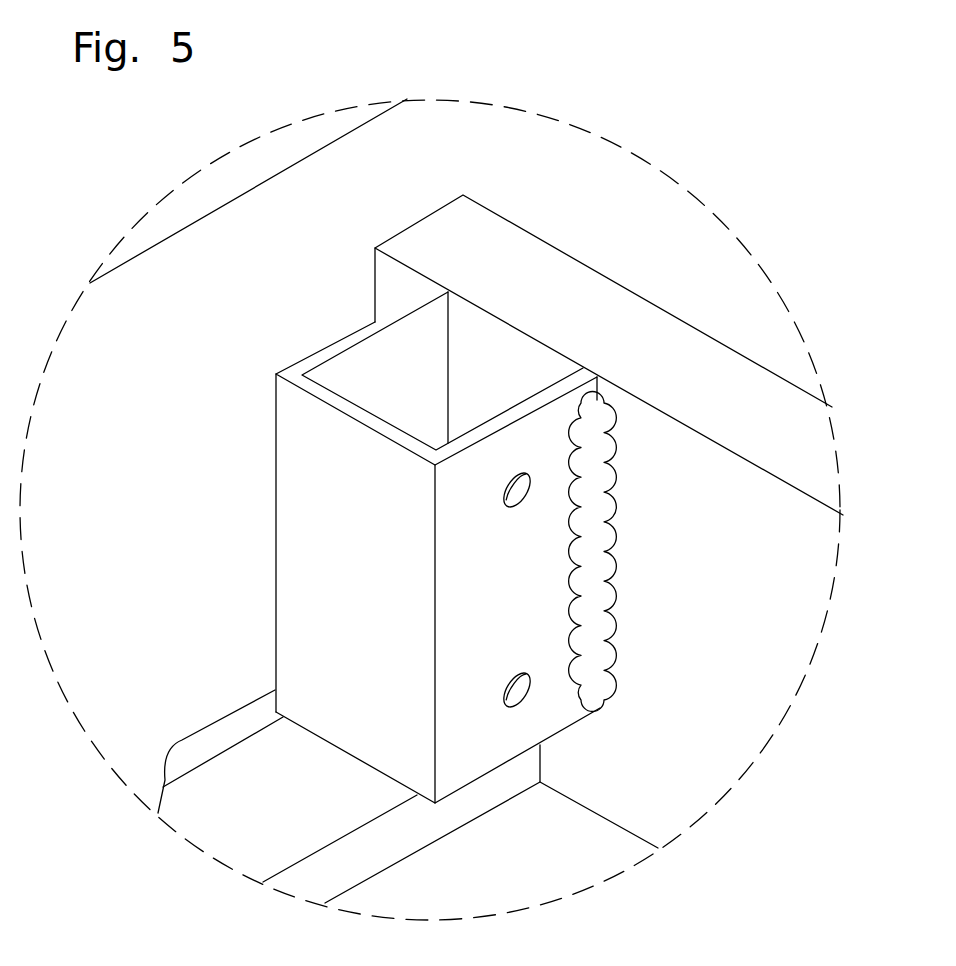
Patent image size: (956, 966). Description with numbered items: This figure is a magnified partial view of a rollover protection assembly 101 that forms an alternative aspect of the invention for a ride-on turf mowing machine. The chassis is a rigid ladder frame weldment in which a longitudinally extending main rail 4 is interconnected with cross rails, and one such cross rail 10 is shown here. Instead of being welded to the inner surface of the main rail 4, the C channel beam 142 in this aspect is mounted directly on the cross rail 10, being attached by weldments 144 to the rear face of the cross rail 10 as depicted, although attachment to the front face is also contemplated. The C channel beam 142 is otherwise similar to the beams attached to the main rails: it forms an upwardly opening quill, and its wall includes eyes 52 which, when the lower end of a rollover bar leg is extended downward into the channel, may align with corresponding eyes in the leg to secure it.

The main rail 4 is at (165, 528).
The cross rail 10 is at (736, 577).
The eyes 52 is at (438, 588).
The rollover protection assembly 101 is at (620, 100).
The C channel beam 142 is at (275, 375).
The weldments 144 is at (616, 636).